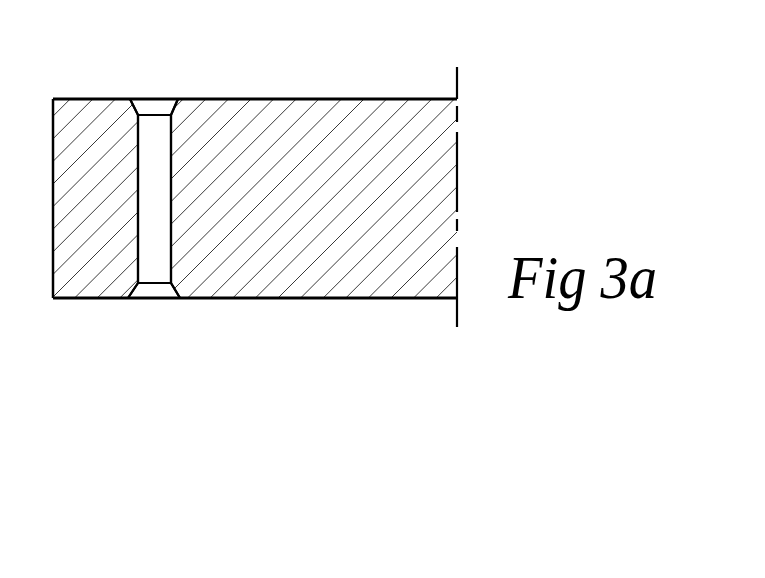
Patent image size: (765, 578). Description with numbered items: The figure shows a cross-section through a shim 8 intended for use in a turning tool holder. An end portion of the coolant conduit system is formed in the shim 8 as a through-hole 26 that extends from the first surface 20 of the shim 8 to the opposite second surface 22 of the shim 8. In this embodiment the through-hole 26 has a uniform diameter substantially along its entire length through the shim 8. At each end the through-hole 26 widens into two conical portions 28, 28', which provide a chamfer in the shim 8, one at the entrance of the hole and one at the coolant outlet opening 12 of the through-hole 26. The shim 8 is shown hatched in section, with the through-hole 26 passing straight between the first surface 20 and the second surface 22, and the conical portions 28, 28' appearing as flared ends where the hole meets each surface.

The shim 8 is at (362, 124).
The coolant outlet opening 12 is at (153, 72).
The first surface 20 is at (290, 320).
The second surface 22 is at (297, 78).
The through-hole 26 is at (155, 180).
The conical portion 28 is at (130, 77).
The conical portion 28' is at (177, 325).